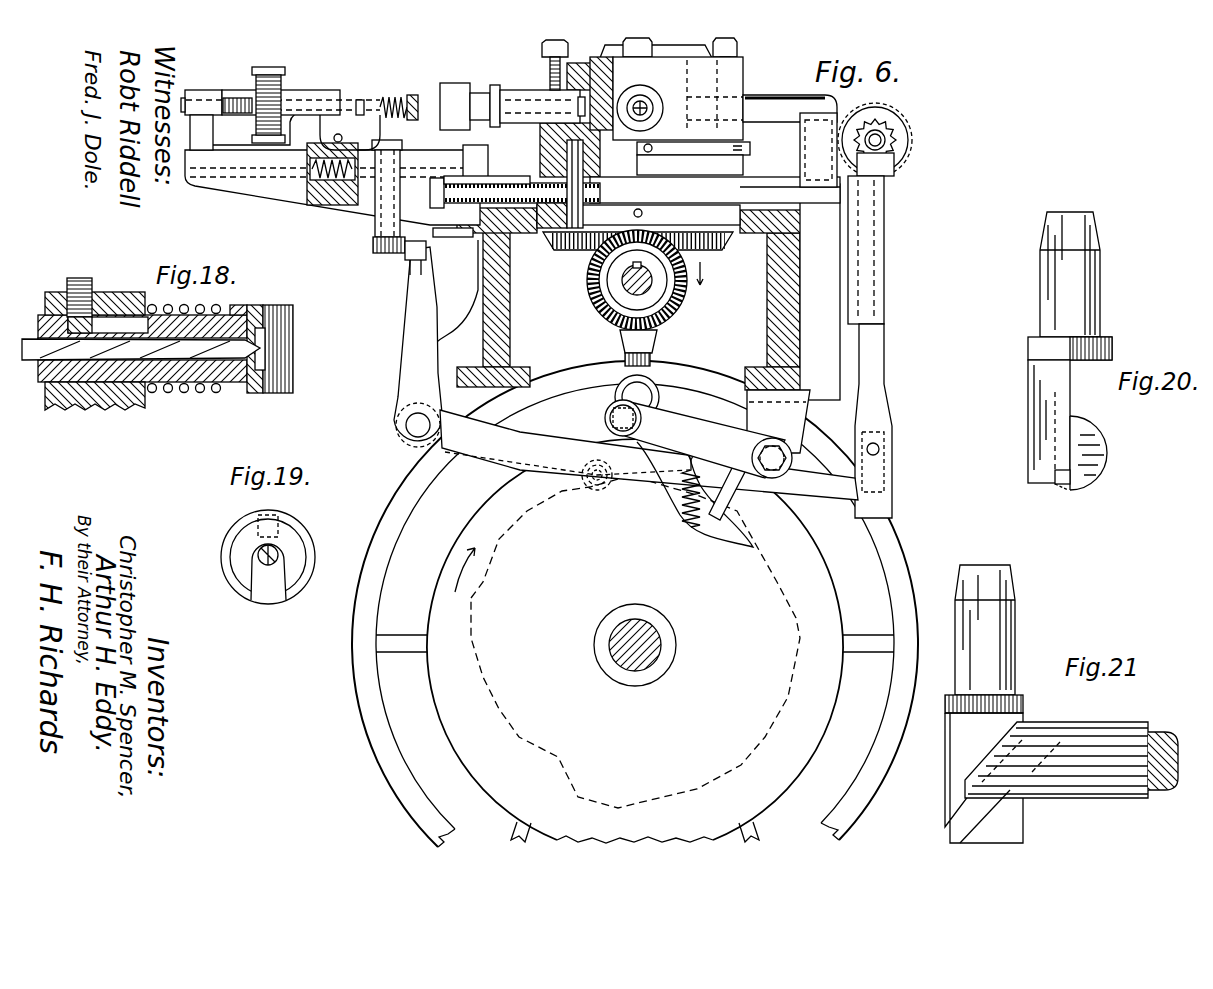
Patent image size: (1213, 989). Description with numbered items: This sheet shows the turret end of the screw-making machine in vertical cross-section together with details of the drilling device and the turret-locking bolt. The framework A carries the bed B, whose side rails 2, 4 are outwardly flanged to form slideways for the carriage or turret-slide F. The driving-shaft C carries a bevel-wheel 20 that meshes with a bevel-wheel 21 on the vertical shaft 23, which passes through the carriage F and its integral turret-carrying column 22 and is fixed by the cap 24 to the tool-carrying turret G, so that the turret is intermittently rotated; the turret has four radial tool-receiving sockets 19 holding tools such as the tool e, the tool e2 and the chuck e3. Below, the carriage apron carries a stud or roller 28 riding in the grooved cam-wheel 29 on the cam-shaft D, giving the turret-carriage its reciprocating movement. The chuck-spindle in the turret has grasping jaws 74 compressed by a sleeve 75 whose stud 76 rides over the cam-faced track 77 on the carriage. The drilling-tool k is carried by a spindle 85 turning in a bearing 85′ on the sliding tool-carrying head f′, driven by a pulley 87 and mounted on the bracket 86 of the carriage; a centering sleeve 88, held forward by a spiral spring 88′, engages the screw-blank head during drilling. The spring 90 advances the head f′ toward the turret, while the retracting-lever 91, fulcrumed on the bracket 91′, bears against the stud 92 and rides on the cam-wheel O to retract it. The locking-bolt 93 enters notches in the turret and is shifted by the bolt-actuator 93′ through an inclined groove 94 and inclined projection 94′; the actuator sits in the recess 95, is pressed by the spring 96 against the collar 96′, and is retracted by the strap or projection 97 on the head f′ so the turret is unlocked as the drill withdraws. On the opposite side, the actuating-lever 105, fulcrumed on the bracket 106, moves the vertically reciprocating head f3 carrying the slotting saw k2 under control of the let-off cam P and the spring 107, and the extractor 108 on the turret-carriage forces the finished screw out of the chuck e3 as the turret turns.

In FIG. 6, the side rail 2 is at (497, 297).
In FIG. 6, the side rail 4 is at (768, 300).
In FIG. 6, the tool-receiving sockets 19 is at (669, 108).
In FIG. 6, the bevel-wheel 20 is at (684, 306).
In FIG. 6, the bevel-wheel 21 is at (712, 250).
In FIG. 6, the turret-carrying column 22 is at (542, 106).
In FIG. 6, the vertical shaft 23 is at (672, 215).
In FIG. 6, the cap 24 is at (680, 58).
In FIG. 6, the stud or roller 28 is at (655, 362).
In FIG. 6, the cam-wheel 29 is at (868, 542).
In FIG. 6, the screw-blank-grasping jaws 74 is at (641, 101).
In FIG. 6, the jaw-compressing sleeve 75 is at (652, 118).
In FIG. 6, the stud 76 is at (652, 146).
In FIG. 6, the cam-faced track 77 is at (702, 162).
In FIG. 6, the spindle 85 is at (240, 113).
In FIG. 18, the spindle 85 is at (206, 396).
In FIG. 6, the bearing 85′ is at (204, 95).
In FIG. 6, the bracket 86 is at (282, 204).
In FIG. 6, the pulley 87 is at (268, 67).
In FIG. 6, the centering sleeve 88 is at (413, 95).
In FIG. 18, the centering sleeve 88 is at (266, 305).
In FIG. 19, the centering sleeve 88 is at (300, 542).
In FIG. 6, the spiral spring 88′ is at (393, 97).
In FIG. 18, the spiral spring 88′ is at (200, 314).
In FIG. 6, the spiral spring 90 is at (337, 204).
In FIG. 6, the retracting-lever 91 is at (410, 320).
In FIG. 6, the bracket 91′ is at (436, 343).
In FIG. 6, the stud 92 is at (373, 246).
In FIG. 6, the locking-bolt 93 is at (516, 182).
In FIG. 20, the locking-bolt 93 is at (1100, 300).
In FIG. 21, the locking-bolt 93 is at (1012, 632).
In FIG. 6, the bolt-actuator 93′ is at (575, 228).
In FIG. 20, the bolt-actuator 93′ is at (1108, 451).
In FIG. 21, the bolt-actuator 93′ is at (1126, 735).
In FIG. 20, the inclined groove 94 is at (1052, 476).
In FIG. 21, the inclined groove 94 is at (978, 814).
In FIG. 20, the inclined projection 94′ is at (1064, 492).
In FIG. 21, the inclined projection 94′ is at (1048, 748).
In FIG. 6, the recess 95 is at (474, 180).
In FIG. 6, the spring 96 is at (543, 224).
In FIG. 6, the collar 96′ is at (461, 237).
In FIG. 6, the strap or projection 97 is at (480, 158).
In FIG. 6, the actuating-lever 105 is at (698, 439).
In FIG. 6, the bracket 106 is at (778, 421).
In FIG. 6, the spring 107 is at (682, 510).
In FIG. 6, the extractor 108 is at (805, 140).
In FIG. 6, the framework A is at (820, 292).
In FIG. 6, the bed B is at (768, 330).
In FIG. 6, the driving-shaft C is at (624, 285).
In FIG. 6, the cam-shaft D is at (645, 632).
In FIG. 6, the carriage or turret-slide F is at (754, 195).
In FIG. 6, the tool-carrying turret G is at (678, 98).
In FIG. 6, the cam-wheel O is at (722, 532).
In FIG. 6, the let-off cam P is at (635, 641).
In FIG. 6, the tool e is at (792, 95).
In FIG. 6, the tool e2 is at (477, 97).
In FIG. 6, the tool or chuck e3 is at (646, 108).
In FIG. 6, the tool-carrying head f′ is at (338, 132).
In FIG. 18, the tool-carrying head f′ is at (308, 342).
In FIG. 6, the tool-carrying head f3 is at (893, 140).
In FIG. 6, the drilling-tool k is at (358, 100).
In FIG. 18, the drilling-tool k is at (185, 364).
In FIG. 19, the drilling-tool k is at (268, 566).
In FIG. 6, the slotting saw k2 is at (885, 128).